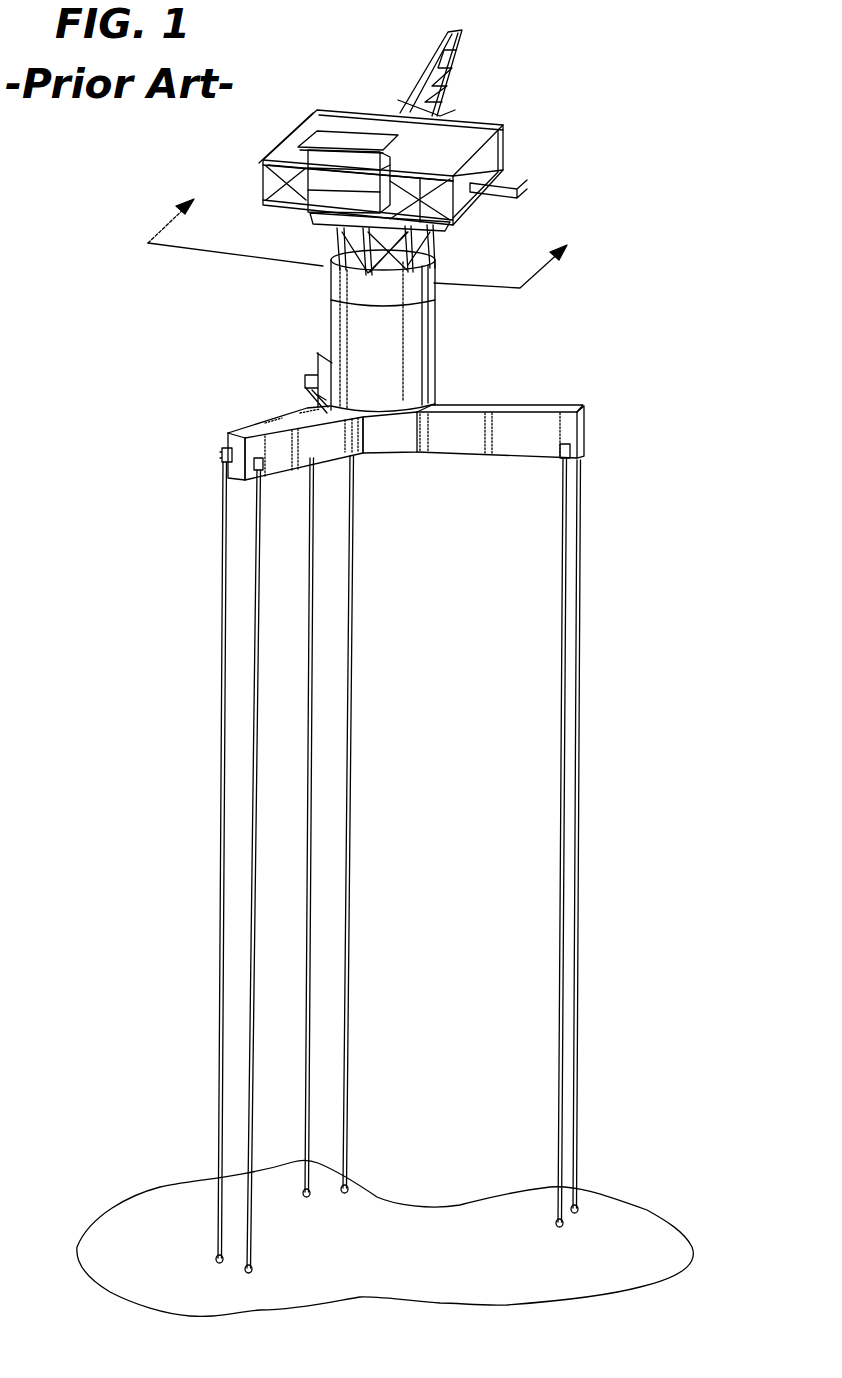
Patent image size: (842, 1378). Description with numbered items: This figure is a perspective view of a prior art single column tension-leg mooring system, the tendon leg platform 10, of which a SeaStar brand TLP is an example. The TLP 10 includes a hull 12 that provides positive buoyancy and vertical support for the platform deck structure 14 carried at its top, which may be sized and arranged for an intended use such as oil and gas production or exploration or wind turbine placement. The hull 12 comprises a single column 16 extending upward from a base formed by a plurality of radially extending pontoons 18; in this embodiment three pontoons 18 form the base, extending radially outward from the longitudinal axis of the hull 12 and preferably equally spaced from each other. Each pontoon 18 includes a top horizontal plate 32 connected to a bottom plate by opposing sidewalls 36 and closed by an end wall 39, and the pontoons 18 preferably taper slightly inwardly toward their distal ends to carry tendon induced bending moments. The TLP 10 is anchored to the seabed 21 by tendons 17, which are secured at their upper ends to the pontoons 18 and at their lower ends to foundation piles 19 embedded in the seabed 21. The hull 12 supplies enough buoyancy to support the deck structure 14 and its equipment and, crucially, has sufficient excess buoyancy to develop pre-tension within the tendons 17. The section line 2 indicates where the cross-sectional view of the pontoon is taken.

The section line 2- 2 is at (369, 228).
The tendon leg platform 10 is at (610, 266).
The hull 12 is at (438, 334).
The platform deck structure 14 is at (503, 177).
The single column 16 is at (413, 365).
The tendons 17 is at (251, 702).
The pontoons 18 is at (483, 406).
The foundation piles 19 is at (247, 1265).
The seabed 21 is at (678, 1240).
The top horizontal plate 32 is at (543, 408).
The sidewalls 36 is at (277, 458).
The end wall 39 is at (223, 442).